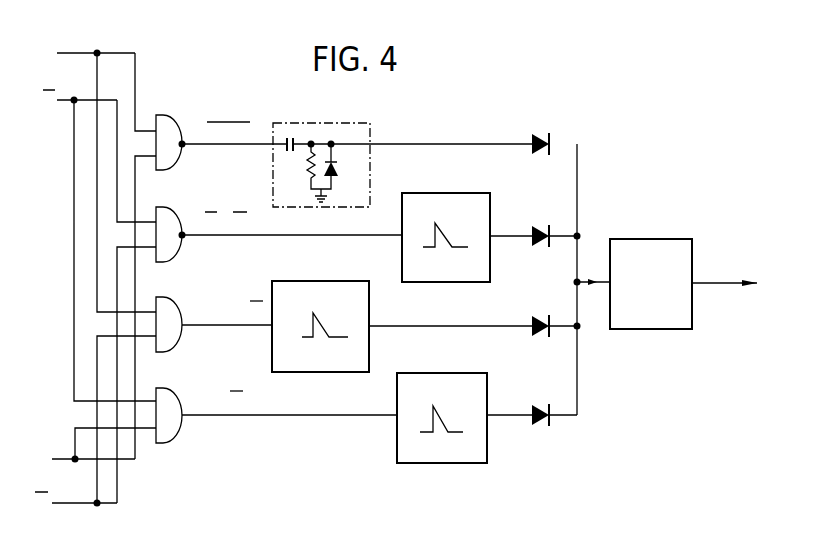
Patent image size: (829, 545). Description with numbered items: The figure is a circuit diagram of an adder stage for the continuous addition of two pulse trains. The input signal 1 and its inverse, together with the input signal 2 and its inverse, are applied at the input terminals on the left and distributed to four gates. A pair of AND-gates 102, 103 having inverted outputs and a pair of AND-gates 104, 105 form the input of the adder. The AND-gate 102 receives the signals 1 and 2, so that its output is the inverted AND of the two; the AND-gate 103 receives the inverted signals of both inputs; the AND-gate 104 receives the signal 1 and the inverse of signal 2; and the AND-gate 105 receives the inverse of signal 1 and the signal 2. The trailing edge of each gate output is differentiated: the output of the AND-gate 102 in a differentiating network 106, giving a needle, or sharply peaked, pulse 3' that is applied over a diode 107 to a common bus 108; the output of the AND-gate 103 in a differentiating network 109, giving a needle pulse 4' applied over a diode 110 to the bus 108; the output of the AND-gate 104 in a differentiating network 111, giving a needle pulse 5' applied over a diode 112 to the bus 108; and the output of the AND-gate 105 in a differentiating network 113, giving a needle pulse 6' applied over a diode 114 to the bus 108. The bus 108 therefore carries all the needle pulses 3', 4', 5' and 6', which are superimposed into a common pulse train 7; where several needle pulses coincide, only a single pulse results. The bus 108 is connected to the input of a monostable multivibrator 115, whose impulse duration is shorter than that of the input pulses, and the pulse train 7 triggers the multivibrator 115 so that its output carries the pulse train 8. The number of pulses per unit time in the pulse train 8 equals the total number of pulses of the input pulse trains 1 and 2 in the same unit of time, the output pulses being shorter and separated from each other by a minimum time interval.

The input signal 1 is at (99, 222).
The input signal 2 is at (95, 335).
The AND-gate 102 is at (166, 127).
The AND-gate 103 is at (166, 217).
The AND-gate 104 is at (168, 307).
The AND-gate 105 is at (166, 397).
The differentiating network 106 is at (368, 130).
The diode 107 is at (540, 136).
The common bus 108 is at (579, 198).
The differentiating network 109 is at (470, 203).
The diode 110 is at (540, 226).
The differentiating network 111 is at (325, 286).
The diode 112 is at (540, 317).
The differentiating network 113 is at (447, 378).
The diode 114 is at (539, 405).
The monostable multivibrator 115 is at (657, 245).
The needle pulse 3' is at (516, 130).
The needle pulse 4' is at (513, 225).
The needle pulse 5' is at (516, 316).
The needle pulse 6' is at (518, 406).
The common pulse train 7 is at (593, 272).
The output pulse train 8 is at (724, 273).